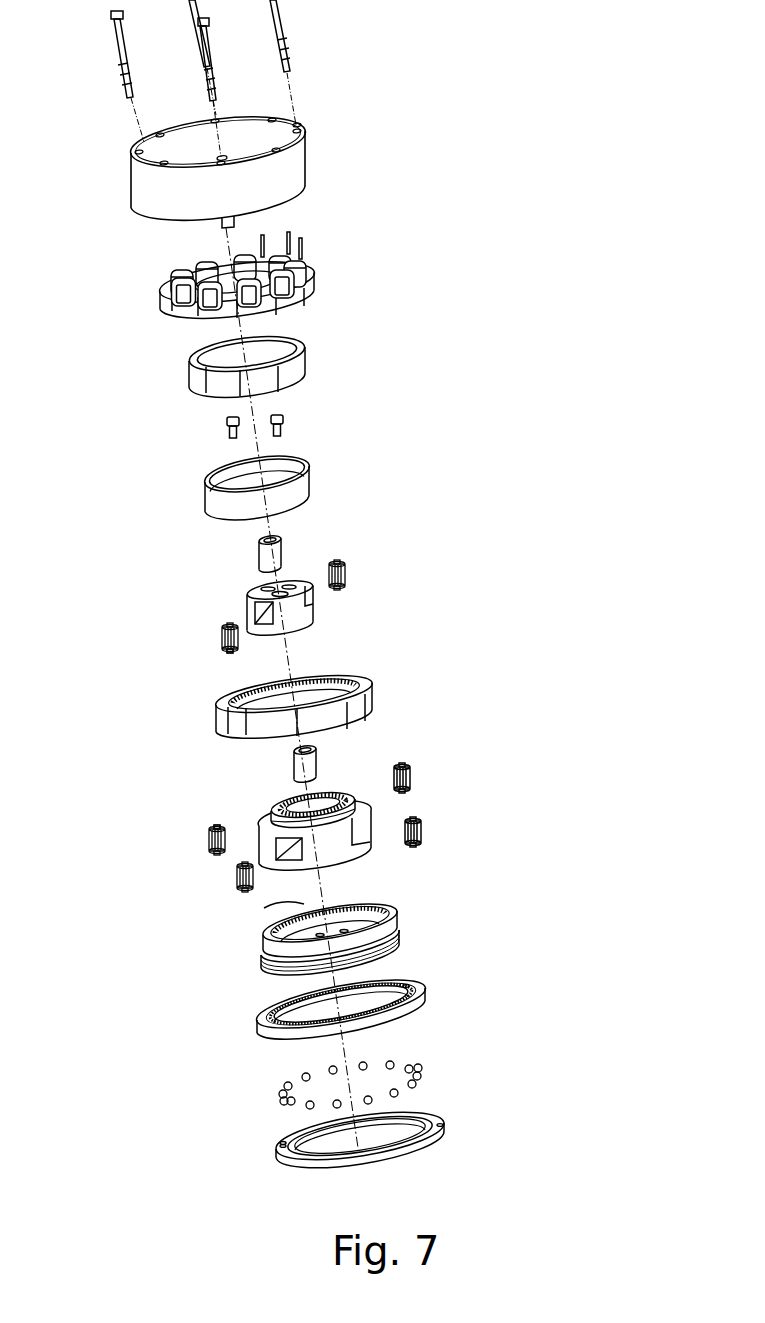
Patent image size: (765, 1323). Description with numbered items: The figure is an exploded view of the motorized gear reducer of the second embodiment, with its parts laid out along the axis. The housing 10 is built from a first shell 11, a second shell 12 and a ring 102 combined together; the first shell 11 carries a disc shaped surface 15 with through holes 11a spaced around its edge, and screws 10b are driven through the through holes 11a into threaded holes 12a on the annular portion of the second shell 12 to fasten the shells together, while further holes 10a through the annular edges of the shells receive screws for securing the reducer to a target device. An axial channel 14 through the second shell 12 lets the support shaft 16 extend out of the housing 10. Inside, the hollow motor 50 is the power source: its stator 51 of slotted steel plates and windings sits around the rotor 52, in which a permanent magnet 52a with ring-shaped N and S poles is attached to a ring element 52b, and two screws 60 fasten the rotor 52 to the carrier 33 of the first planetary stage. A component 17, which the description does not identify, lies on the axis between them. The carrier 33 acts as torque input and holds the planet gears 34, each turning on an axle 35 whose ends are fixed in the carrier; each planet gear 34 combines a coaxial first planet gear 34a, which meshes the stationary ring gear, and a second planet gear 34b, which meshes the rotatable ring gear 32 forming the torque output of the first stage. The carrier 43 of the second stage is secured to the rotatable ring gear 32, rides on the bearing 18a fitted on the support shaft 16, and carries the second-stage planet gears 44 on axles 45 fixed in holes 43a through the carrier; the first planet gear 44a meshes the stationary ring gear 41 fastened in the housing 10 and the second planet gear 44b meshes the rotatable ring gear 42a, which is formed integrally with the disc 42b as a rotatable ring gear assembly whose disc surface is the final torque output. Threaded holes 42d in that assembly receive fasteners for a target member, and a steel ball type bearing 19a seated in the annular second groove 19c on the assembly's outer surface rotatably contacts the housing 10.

The housing 10 is at (141, 221).
The holes 10a is at (145, 146).
The screws 10b is at (287, 20).
The first shell 11 is at (150, 185).
The through holes 11a is at (295, 125).
The second shell 12 is at (327, 1148).
The threaded holes 12a is at (283, 1141).
The axial channel 14 is at (313, 1022).
The disc shaped surface 15 is at (262, 132).
The support shaft 16 is at (237, 213).
The sleeve 17 is at (264, 553).
The bearing 18a is at (320, 762).
The steel ball type bearing 19a is at (410, 1062).
The annular second groove 19c is at (400, 932).
The rotatable ring gear 32 is at (304, 800).
The carrier 33 is at (312, 615).
The planet gears 34 is at (123, 612).
The first planet gear 34a is at (221, 637).
The second planet gear 34b is at (224, 645).
The axle 35 is at (247, 627).
The stationary ring gear 41 is at (376, 693).
The rotatable ring gear 42a is at (330, 906).
The disc 42b is at (285, 945).
The threaded holes 42d is at (313, 910).
The carrier 43 is at (345, 831).
The holes 43a is at (395, 790).
The planet gears 44 is at (118, 832).
The first planet gear 44a is at (202, 835).
The second planet gear 44b is at (280, 857).
The axle 45 is at (217, 823).
The hollow motor 50 is at (414, 349).
The stator 51 is at (317, 287).
The rotor 52 is at (352, 434).
The permanent magnet 52a is at (297, 365).
The ring element 52b is at (300, 487).
The screws 60 is at (283, 430).
The ring 102 is at (308, 1021).